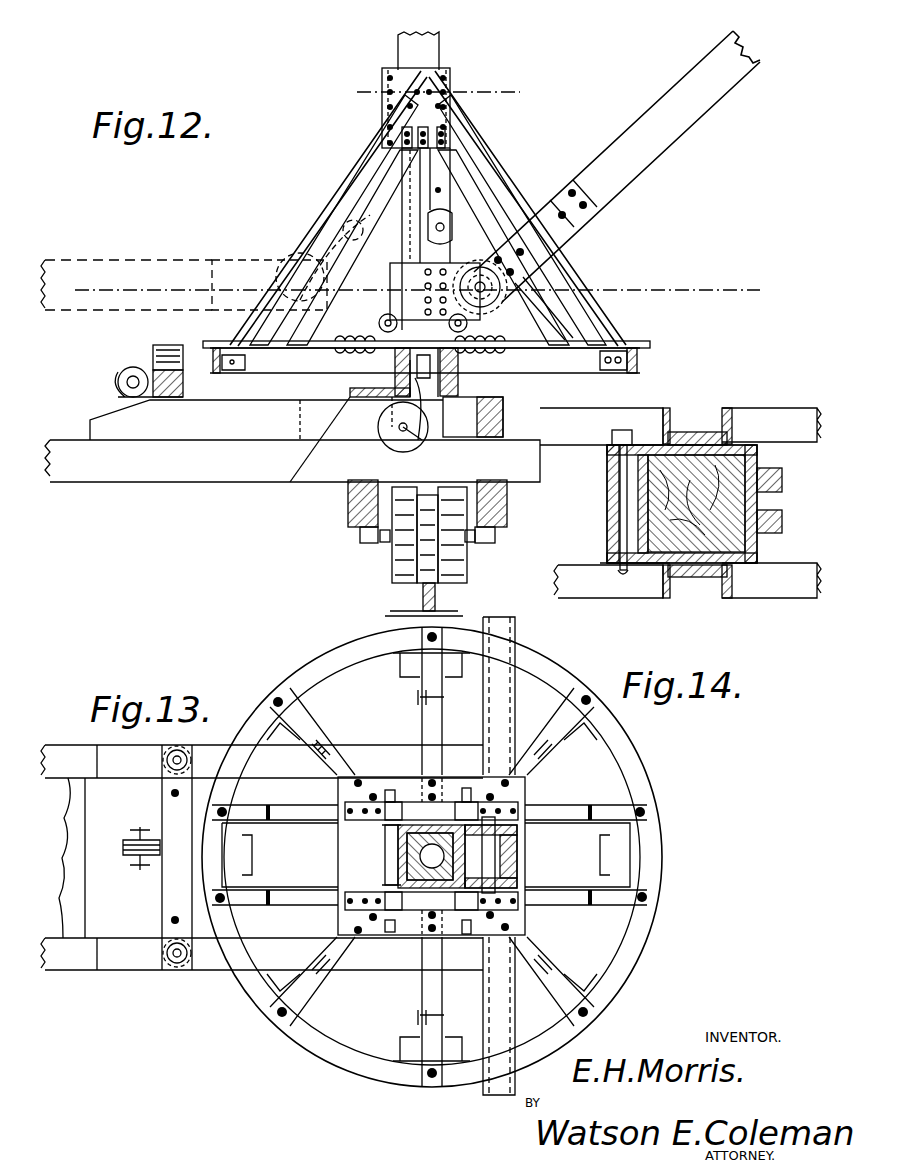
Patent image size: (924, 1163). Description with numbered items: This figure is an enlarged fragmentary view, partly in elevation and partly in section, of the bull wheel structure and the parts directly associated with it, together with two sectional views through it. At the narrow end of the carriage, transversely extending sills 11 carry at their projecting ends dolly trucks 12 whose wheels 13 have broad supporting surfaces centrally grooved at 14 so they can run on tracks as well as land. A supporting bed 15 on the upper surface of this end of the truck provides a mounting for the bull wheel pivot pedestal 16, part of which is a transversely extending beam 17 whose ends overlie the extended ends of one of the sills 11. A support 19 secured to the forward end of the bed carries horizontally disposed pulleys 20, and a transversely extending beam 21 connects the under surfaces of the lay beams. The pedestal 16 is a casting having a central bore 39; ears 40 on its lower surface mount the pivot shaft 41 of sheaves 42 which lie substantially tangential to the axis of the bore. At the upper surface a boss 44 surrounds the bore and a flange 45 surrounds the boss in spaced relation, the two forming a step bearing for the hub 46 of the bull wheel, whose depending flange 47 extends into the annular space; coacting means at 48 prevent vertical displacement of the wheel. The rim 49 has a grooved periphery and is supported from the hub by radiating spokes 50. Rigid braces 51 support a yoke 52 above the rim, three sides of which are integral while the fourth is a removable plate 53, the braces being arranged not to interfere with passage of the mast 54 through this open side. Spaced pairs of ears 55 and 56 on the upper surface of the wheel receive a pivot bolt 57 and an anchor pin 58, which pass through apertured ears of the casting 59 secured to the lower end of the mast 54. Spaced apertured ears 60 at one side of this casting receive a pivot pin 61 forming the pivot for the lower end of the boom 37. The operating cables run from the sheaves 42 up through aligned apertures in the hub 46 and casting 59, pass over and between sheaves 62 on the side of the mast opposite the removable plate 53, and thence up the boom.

In FIG. 12, the sills 11 is at (360, 507).
In FIG. 12, the dolly trucks 12 is at (358, 537).
In FIG. 12, the wheels 13 is at (395, 562).
In FIG. 12, the grooves 14 is at (430, 547).
In FIG. 12, the supporting bed 15 is at (180, 430).
In FIG. 12, the bull wheel pivot pedestal 16 is at (340, 400).
In FIG. 12, the transversely extending beam 17 is at (513, 440).
In FIG. 12, the support 19 is at (185, 389).
In FIG. 13, the support 19 is at (163, 887).
In FIG. 12, the pulleys 20 is at (153, 360).
In FIG. 13, the pulleys 20 is at (167, 752).
In FIG. 13, the transversely extending beam 21 is at (259, 857).
In FIG. 12, the boom 37 is at (655, 160).
In FIG. 12, the central bore 39 is at (392, 392).
In FIG. 12, the ears 40 is at (385, 432).
In FIG. 12, the pivot shaft 41 is at (410, 432).
In FIG. 12, the sheaves 42 is at (404, 437).
In FIG. 13, the sheaves 42 is at (515, 880).
In FIG. 12, the boss 44 is at (473, 417).
In FIG. 12, the flange 45 is at (490, 406).
In FIG. 12, the hub 46 is at (500, 374).
In FIG. 12, the depending flange 47 is at (470, 381).
In FIG. 12, the coacting means 48 is at (412, 382).
In FIG. 12, the rim 49 is at (645, 356).
In FIG. 13, the rim 49 is at (650, 937).
In FIG. 13, the spokes 50 is at (440, 732).
In FIG. 12, the braces 51 is at (350, 182).
In FIG. 12, the yoke 52 is at (445, 72).
In FIG. 14, the yoke 52 is at (758, 550).
In FIG. 14, the removable plate 53 is at (618, 487).
In FIG. 14, the mast 54 is at (665, 582).
In FIG. 13, the ears 55 is at (382, 803).
In FIG. 13, the ears 56 is at (485, 778).
In FIG. 13, the pivot bolt 57 is at (372, 915).
In FIG. 13, the anchor pin 58 is at (473, 940).
In FIG. 12, the casting 59 is at (420, 274).
In FIG. 12, the ears 60 is at (500, 230).
In FIG. 12, the pivot pin 61 is at (486, 286).
In FIG. 13, the pivot pin 61 is at (517, 857).
In FIG. 12, the sheaves 62 is at (455, 190).
In FIG. 14, the sheaves 62 is at (782, 520).